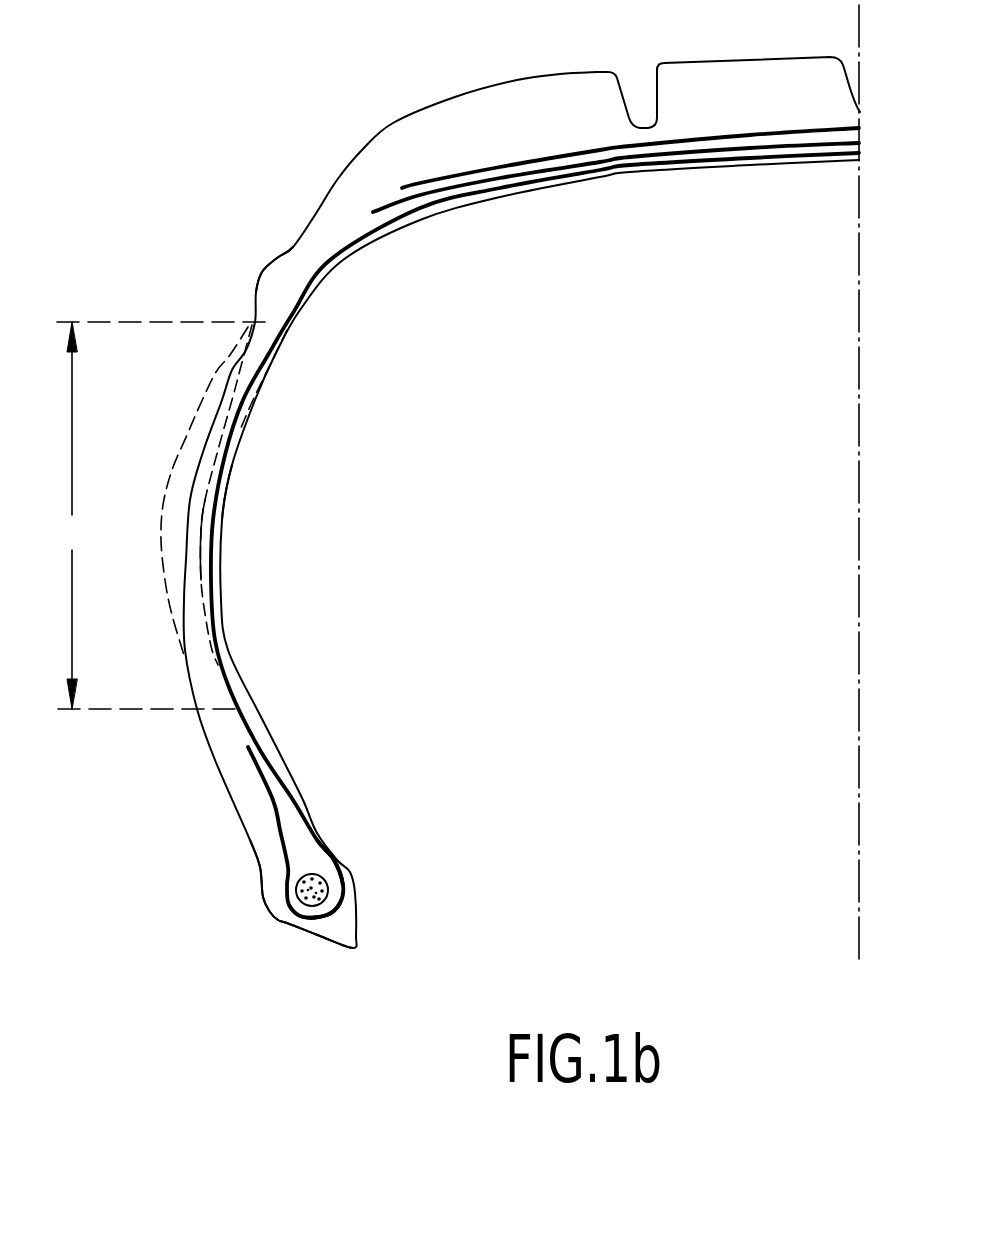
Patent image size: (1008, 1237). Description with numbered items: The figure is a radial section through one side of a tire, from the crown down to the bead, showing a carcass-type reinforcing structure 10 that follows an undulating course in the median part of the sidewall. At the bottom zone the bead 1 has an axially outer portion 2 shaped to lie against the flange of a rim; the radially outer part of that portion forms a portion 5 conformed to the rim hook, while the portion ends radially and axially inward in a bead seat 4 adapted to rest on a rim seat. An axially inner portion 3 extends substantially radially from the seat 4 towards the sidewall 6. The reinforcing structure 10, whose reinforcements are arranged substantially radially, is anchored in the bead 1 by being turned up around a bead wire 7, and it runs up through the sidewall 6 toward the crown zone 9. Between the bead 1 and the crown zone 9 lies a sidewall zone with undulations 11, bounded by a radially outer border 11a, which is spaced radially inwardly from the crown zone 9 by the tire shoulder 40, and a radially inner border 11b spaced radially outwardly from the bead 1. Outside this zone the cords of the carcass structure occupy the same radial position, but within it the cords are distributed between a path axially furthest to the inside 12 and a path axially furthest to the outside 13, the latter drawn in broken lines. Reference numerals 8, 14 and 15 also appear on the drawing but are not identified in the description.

The bead 1 is at (277, 900).
The axially outer portion 2 is at (275, 878).
The axially inner portion 3 is at (340, 875).
The bead seat 4 is at (340, 922).
The portion conformed to the rim hook 5 is at (247, 822).
The sidewall 6 is at (208, 512).
The bead wire 7 is at (327, 897).
The carcass wrap around bead 8 is at (292, 917).
The crown zone 9 is at (595, 122).
The reinforcing structure 10 is at (335, 262).
The sidewall zone with undulations 11 is at (78, 515).
The radially outer border 11a is at (128, 320).
The radially inner border 11b is at (103, 715).
The axially innermost reinforcement structure path 12 is at (218, 470).
The axially outermost reinforcement structure path 13 is at (192, 580).
The sidewall layer 14 is at (237, 420).
The alternative sidewall contour 15 is at (190, 452).
The shoulder 40 is at (283, 307).